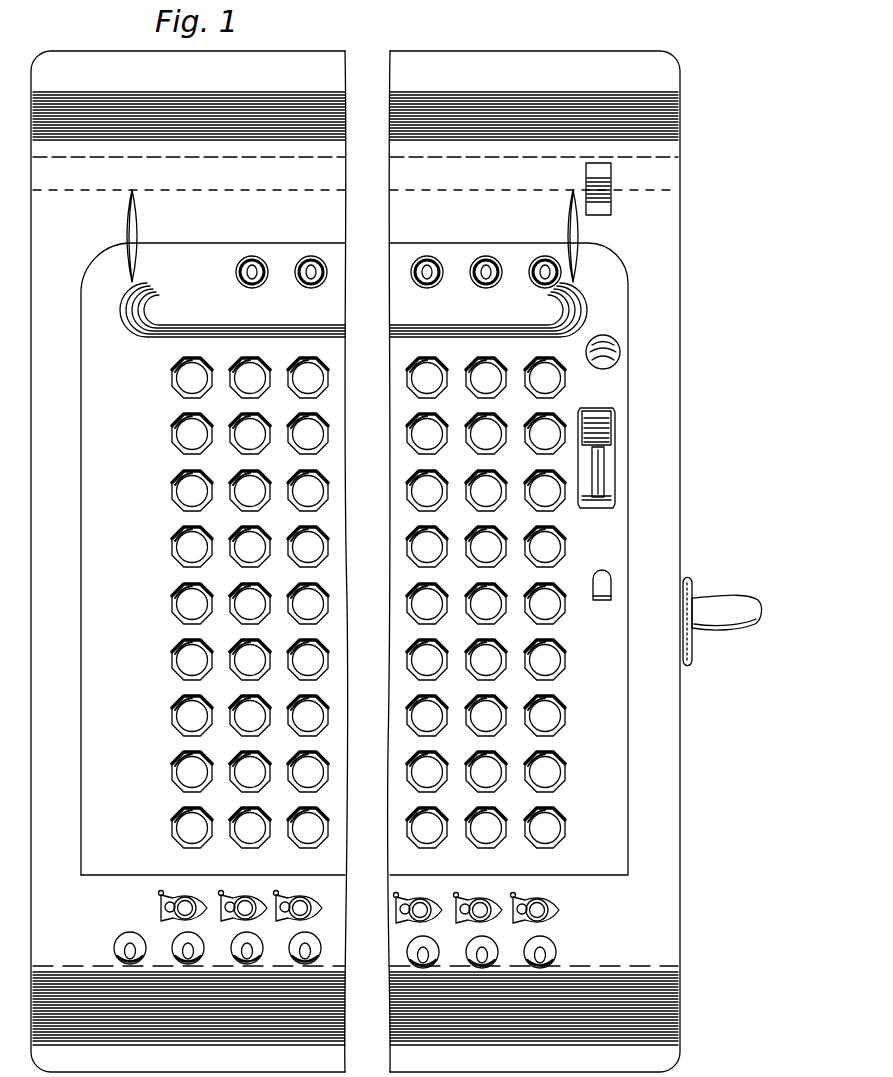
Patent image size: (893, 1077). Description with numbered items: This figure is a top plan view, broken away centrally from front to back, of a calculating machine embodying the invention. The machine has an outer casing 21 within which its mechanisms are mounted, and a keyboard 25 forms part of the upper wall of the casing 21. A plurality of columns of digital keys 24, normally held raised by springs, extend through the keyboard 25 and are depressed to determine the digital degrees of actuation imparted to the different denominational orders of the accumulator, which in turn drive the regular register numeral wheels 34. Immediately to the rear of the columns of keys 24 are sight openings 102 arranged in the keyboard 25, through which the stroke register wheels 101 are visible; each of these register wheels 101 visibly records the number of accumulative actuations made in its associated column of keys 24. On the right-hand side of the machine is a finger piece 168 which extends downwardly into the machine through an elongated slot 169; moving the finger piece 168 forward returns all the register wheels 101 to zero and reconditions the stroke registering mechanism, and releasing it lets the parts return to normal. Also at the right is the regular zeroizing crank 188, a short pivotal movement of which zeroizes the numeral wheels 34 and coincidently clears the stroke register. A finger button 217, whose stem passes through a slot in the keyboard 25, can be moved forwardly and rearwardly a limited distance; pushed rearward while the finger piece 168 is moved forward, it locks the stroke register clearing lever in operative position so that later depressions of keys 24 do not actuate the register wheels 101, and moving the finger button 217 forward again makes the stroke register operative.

The outer casing 21 is at (660, 87).
The digital keys 24 is at (563, 654).
The keyboard 25 is at (618, 778).
The numeral wheel 34 is at (130, 940).
The register wheels 101 is at (262, 260).
The sight openings 102 is at (437, 258).
The finger piece 168 is at (600, 426).
The elongated slot 169 is at (600, 474).
The zeroizing crank 188 is at (720, 612).
The finger button 217 is at (612, 585).